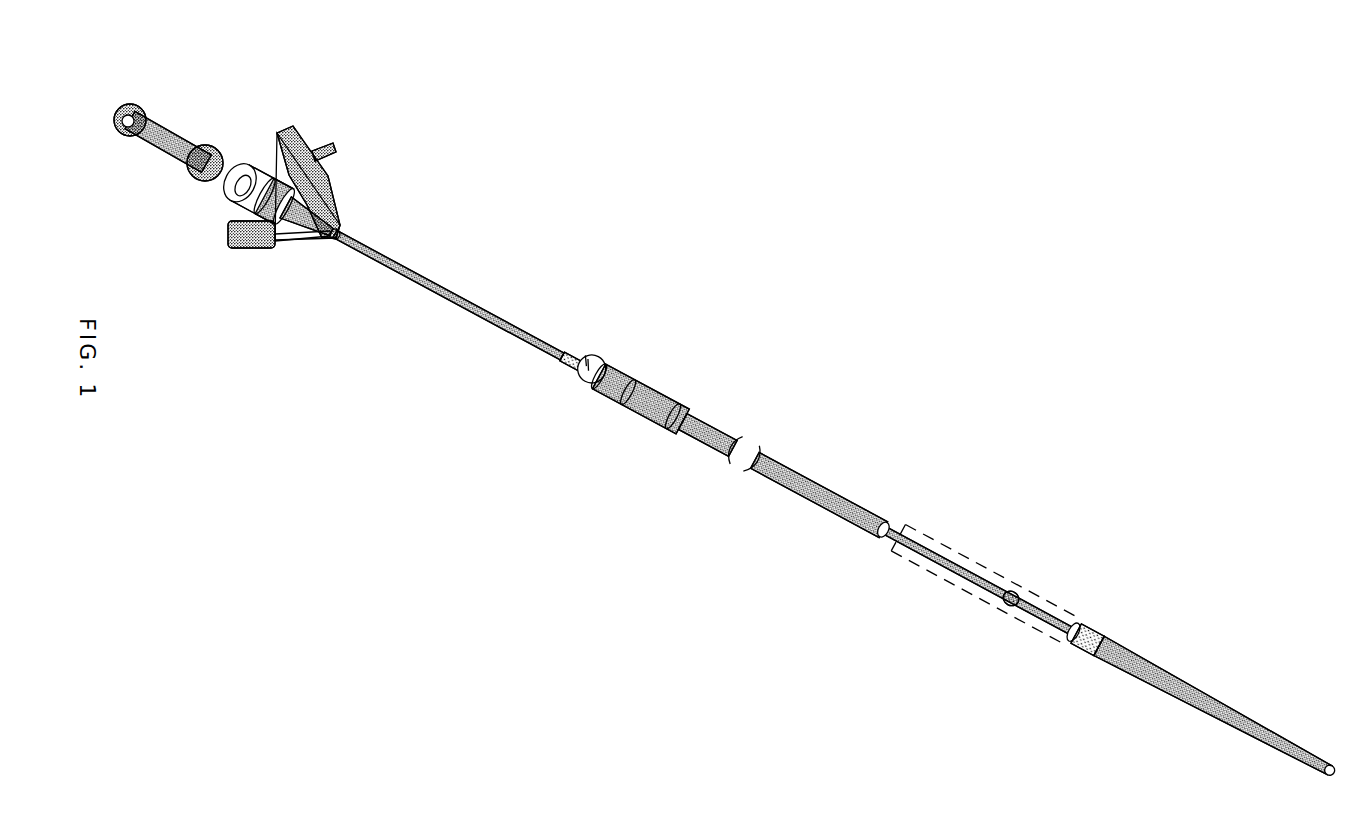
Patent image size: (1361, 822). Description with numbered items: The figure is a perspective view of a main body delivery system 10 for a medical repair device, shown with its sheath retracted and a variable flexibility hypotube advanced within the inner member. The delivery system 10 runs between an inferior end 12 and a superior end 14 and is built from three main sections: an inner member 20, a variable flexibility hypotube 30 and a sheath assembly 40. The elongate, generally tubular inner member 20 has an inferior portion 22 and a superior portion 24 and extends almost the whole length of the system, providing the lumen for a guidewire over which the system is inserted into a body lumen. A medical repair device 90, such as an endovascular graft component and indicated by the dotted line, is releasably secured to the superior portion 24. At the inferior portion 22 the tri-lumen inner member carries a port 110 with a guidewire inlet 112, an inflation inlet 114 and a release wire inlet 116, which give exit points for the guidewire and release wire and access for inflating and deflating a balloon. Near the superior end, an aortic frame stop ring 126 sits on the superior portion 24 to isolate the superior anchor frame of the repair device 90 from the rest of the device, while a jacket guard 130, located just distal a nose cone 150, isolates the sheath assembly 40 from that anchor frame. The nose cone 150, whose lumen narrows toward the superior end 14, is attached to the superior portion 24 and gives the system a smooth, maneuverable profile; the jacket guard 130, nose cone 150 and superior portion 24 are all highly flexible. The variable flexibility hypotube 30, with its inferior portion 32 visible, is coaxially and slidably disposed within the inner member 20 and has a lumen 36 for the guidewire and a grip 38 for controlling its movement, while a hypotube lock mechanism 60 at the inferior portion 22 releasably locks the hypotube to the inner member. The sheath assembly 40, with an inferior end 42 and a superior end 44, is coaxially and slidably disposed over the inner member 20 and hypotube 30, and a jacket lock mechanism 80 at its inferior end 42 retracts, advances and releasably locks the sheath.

The main body delivery system 10 is at (818, 320).
The inferior end 12 is at (128, 105).
The superior end 14 is at (1338, 768).
The inner member 20 is at (494, 320).
The inferior portion 22 is at (341, 234).
The superior portion 24 is at (1076, 630).
The variable flexibility hypotube 30 is at (224, 193).
The inferior portion 32 is at (234, 163).
The lumen 36 is at (120, 134).
The grip 38 is at (160, 125).
The sheath assembly 40 is at (700, 432).
The inferior end 42 is at (625, 386).
The superior end 44 is at (886, 528).
The hypotube lock mechanism 60 is at (247, 170).
The jacket lock mechanism 80 is at (570, 377).
The medical repair device 90 is at (980, 579).
The port 110 is at (332, 172).
The guidewire inlet 112 is at (114, 120).
The inflation inlet 114 is at (288, 130).
The release wire inlet 116 is at (230, 250).
The aortic frame stop ring 126 is at (1006, 606).
The jacket guard 130 is at (1083, 646).
The nose cone 150 is at (1176, 676).